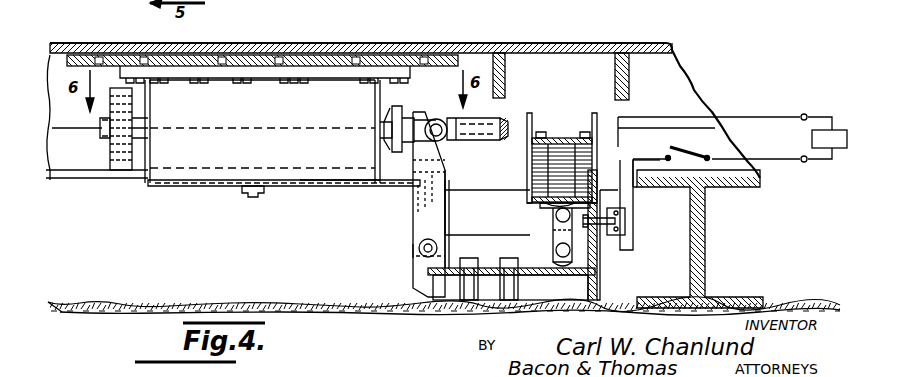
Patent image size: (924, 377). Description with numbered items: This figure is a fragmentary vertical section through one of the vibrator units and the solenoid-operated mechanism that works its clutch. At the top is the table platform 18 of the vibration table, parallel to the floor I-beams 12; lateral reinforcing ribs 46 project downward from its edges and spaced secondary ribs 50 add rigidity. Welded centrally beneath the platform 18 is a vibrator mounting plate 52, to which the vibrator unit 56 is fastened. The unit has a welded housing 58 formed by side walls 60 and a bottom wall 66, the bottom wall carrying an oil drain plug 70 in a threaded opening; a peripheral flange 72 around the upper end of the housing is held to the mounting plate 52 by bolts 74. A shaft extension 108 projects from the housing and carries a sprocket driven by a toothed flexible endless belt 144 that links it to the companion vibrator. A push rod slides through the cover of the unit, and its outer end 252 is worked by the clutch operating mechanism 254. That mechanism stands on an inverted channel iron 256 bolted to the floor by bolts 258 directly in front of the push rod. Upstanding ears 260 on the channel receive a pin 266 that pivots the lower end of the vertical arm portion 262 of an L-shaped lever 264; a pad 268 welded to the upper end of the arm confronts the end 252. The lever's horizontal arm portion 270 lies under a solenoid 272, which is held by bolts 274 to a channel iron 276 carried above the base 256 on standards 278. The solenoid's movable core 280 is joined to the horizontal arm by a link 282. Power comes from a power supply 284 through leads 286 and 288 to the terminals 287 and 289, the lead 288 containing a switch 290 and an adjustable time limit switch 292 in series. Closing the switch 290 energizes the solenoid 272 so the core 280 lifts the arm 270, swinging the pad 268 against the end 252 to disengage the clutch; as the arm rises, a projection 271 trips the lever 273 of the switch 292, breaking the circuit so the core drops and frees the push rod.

The I-beams 12 is at (706, 240).
The table platform 18 is at (582, 44).
The lateral reinforcing ribs 46 is at (430, 0).
The secondary ribs 50 is at (506, 86).
The vibrator mounting plate 52 is at (336, 56).
The vibrator unit 56 is at (212, 191).
The housing 58 is at (238, 187).
The side walls 60 is at (166, 175).
The bottom wall 66 is at (306, 187).
The oil drain plug 70 is at (256, 198).
The peripheral flange 72 is at (301, 80).
The bolts 74 is at (333, 84).
The shaft extension 108 is at (96, 131).
The toothed flexible endless belt 144 is at (133, 103).
The outer end of push rod 252 is at (395, 143).
The clutch operating mechanism 254 is at (390, 226).
The inverted channel iron 256 is at (600, 290).
The bolts 258 is at (504, 292).
The upstanding ears 260 is at (418, 251).
The vertical arm portion 262 is at (442, 195).
The L-shaped lever 264 is at (458, 236).
The pin 266 is at (428, 240).
The pad 268 is at (410, 115).
The horizontal arm portion 270 is at (576, 250).
The projection 271 is at (600, 262).
The solenoid 272 is at (522, 160).
The lever 273 is at (618, 238).
The bolts 274 is at (542, 136).
The channel iron 276 is at (594, 118).
The standards 278 is at (528, 212).
The movable core 280 is at (548, 218).
The link 282 is at (510, 287).
The power supply 284 is at (840, 150).
The lead 286 is at (744, 116).
The terminal 287 is at (645, 160).
The lead 288 is at (766, 159).
The terminal 289 is at (630, 160).
The switch 290 is at (712, 134).
The adjustable time limit switch 292 is at (622, 240).